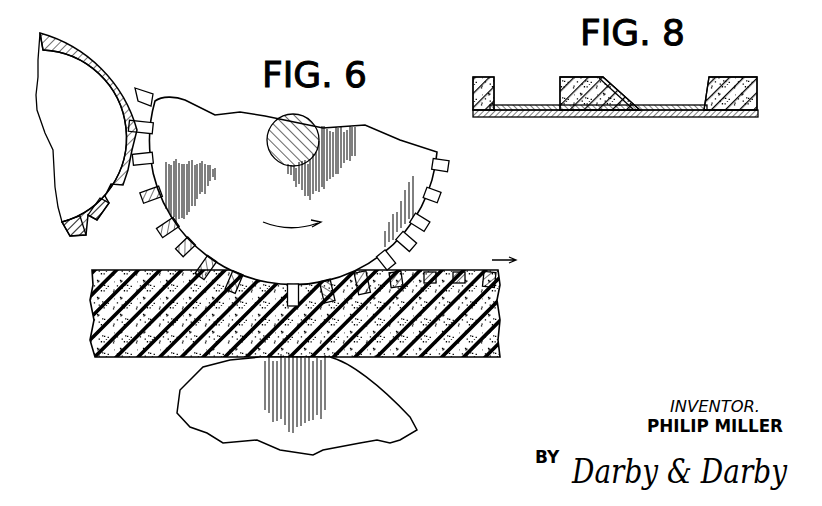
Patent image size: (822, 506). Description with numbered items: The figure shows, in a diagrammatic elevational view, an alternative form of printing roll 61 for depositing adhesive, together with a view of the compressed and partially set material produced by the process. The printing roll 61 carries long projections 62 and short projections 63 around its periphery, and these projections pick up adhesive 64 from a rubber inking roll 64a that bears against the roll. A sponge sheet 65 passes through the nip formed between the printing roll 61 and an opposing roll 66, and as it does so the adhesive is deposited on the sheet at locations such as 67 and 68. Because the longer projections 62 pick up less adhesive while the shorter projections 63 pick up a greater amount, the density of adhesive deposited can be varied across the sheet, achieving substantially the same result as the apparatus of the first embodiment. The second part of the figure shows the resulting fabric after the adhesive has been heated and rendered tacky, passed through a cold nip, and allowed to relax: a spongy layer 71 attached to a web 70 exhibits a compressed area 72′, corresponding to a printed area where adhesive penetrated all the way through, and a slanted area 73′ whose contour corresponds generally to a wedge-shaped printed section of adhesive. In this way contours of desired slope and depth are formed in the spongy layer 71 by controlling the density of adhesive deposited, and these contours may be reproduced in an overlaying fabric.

In FIG. 6, the printing roll 61 is at (248, 166).
In FIG. 6, the long projections 62 is at (130, 127).
In FIG. 6, the short projections 63 is at (141, 90).
In FIG. 6, the adhesive 64 is at (100, 215).
In FIG. 6, the rubber inking roll 64a is at (97, 164).
In FIG. 6, the sponge sheet 65 is at (192, 357).
In FIG. 6, the roll 66 is at (241, 409).
In FIG. 6, the deposited adhesive 67 is at (397, 272).
In FIG. 6, the deposited adhesive 68 is at (447, 272).
In FIG. 8, the web 70 is at (680, 114).
In FIG. 8, the spongy layer 71 is at (479, 77).
In FIG. 8, the compressed area 72′ is at (542, 105).
In FIG. 8, the slanted area 73′ is at (612, 96).